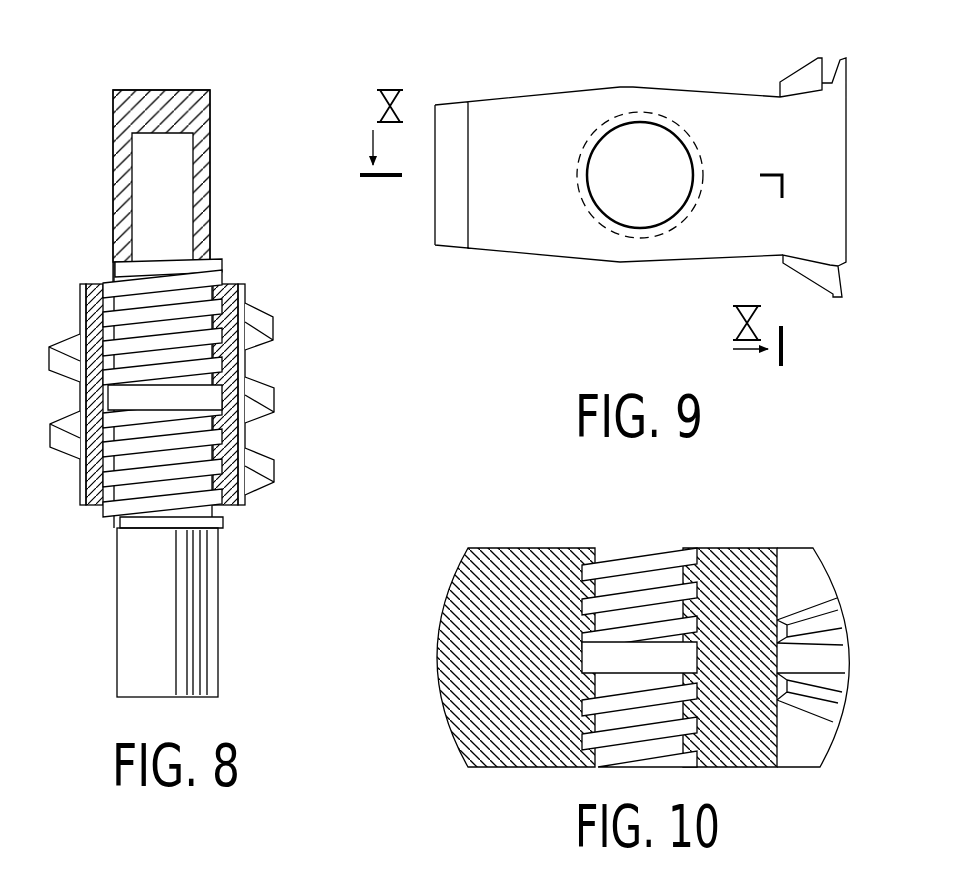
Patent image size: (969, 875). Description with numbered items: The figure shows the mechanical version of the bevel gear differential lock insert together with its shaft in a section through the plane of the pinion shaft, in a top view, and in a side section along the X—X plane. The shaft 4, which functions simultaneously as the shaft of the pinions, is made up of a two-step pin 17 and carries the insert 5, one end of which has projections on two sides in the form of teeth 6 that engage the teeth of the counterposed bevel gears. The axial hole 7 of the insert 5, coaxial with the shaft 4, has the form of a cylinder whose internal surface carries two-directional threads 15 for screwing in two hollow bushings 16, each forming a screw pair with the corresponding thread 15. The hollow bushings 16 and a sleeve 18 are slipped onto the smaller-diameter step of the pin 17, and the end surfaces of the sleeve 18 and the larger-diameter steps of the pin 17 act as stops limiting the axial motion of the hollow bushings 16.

In FIG. 8, the shaft 4 is at (172, 70).
In FIG. 8, the insert 5 is at (87, 300).
In FIG. 9, the insert 5 is at (515, 220).
In FIG. 10, the insert 5 is at (516, 567).
In FIG. 8, the teeth 6 is at (67, 360).
In FIG. 9, the teeth 6 is at (802, 82).
In FIG. 10, the teeth 6 is at (803, 618).
In FIG. 9, the axial hole 7 is at (630, 192).
In FIG. 10, the two-directional threads 15 is at (612, 577).
In FIG. 8, the hollow bushings 16 is at (123, 290).
In FIG. 8, the two-step pin 17 is at (132, 557).
In FIG. 8, the sleeve 18 is at (193, 115).